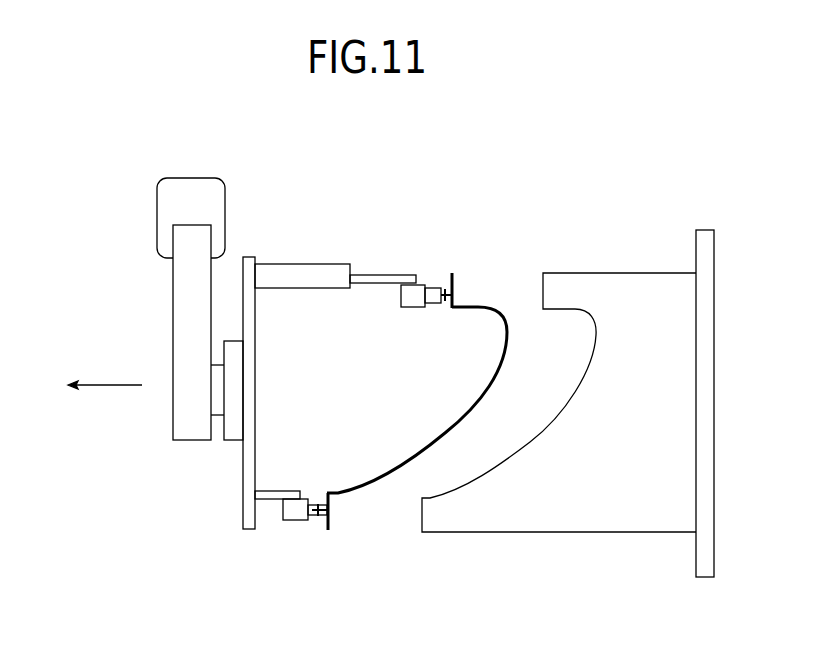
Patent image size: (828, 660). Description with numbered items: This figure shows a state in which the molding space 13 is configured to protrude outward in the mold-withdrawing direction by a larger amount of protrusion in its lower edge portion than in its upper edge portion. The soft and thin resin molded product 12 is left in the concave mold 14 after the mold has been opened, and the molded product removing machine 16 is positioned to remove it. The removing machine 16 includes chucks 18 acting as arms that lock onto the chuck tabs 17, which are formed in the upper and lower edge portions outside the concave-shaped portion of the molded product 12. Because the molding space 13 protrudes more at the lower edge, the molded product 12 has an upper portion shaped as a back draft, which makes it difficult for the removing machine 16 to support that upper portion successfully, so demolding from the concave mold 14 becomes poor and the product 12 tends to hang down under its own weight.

The soft and thin resin molded product 12 is at (446, 433).
The molding space 13 is at (547, 424).
The concave mold 14 is at (567, 533).
The molded product removing machine 16 is at (241, 202).
The chuck tabs 17 is at (445, 290).
The chuck 18 is at (412, 271).